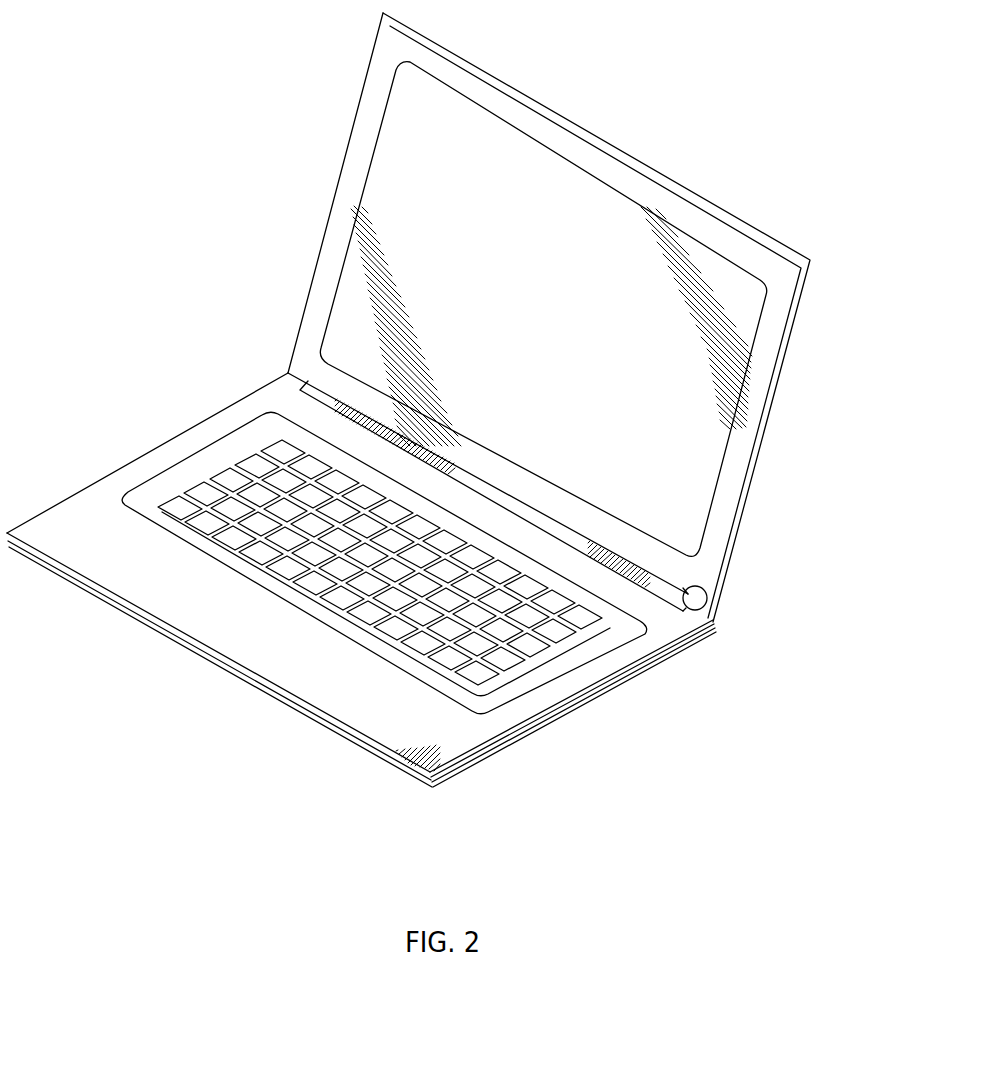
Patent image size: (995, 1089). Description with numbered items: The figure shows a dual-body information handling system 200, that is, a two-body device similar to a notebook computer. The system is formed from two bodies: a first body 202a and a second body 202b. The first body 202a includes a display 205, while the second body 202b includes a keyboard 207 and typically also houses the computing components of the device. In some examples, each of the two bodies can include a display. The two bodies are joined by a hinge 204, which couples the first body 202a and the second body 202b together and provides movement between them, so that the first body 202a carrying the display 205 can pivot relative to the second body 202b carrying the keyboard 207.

The dual-body information handling system 200 is at (800, 93).
The first body 202a is at (753, 438).
The second body 202b is at (146, 458).
The hinge 204 is at (714, 602).
The display 205 is at (713, 243).
The keyboard 207 is at (603, 699).